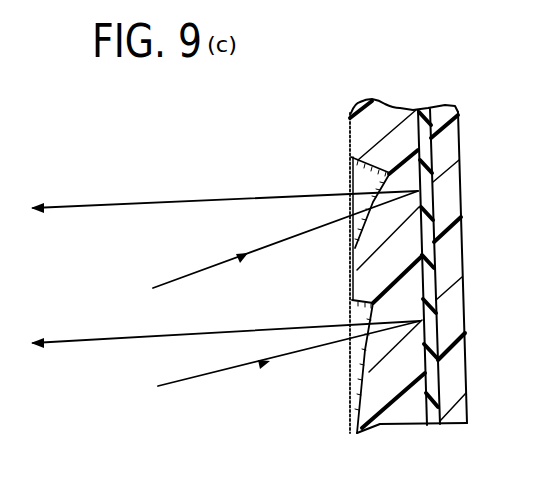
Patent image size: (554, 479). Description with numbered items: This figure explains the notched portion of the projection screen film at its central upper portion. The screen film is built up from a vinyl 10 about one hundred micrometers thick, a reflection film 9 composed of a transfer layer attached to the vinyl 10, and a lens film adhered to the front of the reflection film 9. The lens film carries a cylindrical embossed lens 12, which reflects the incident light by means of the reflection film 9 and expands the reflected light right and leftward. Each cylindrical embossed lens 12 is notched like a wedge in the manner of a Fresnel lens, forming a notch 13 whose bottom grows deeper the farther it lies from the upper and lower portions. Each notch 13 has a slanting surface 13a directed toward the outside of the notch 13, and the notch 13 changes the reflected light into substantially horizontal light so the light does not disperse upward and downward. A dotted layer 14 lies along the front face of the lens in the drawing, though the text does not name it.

The reflection film 9 is at (422, 105).
The vinyl 10 is at (447, 103).
The cylindrical embossed lens 12 is at (380, 113).
The notch 13 is at (417, 193).
The slanting surface 13a is at (350, 228).
The light diffusing film 14 is at (349, 118).